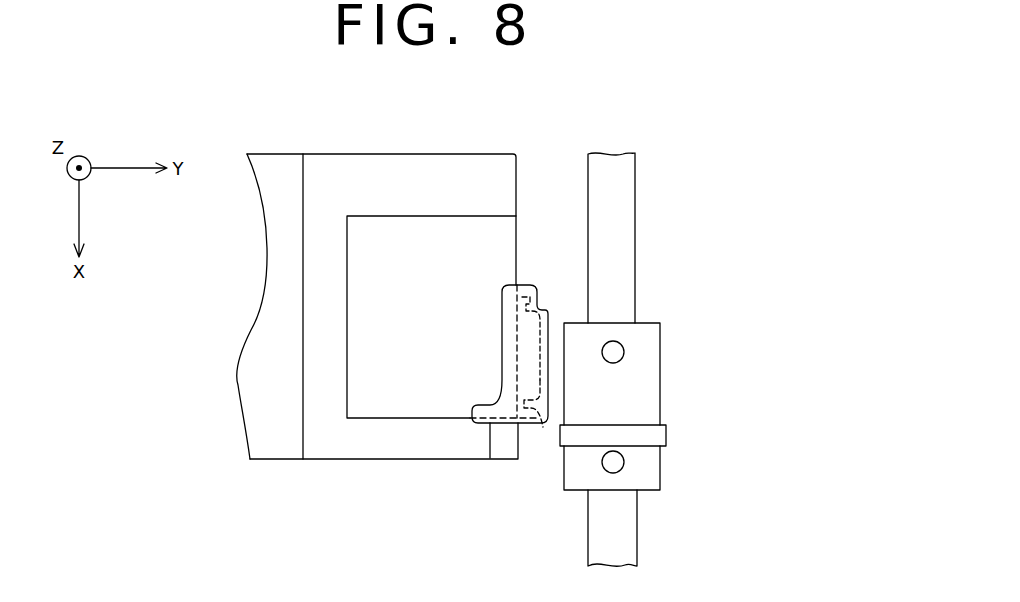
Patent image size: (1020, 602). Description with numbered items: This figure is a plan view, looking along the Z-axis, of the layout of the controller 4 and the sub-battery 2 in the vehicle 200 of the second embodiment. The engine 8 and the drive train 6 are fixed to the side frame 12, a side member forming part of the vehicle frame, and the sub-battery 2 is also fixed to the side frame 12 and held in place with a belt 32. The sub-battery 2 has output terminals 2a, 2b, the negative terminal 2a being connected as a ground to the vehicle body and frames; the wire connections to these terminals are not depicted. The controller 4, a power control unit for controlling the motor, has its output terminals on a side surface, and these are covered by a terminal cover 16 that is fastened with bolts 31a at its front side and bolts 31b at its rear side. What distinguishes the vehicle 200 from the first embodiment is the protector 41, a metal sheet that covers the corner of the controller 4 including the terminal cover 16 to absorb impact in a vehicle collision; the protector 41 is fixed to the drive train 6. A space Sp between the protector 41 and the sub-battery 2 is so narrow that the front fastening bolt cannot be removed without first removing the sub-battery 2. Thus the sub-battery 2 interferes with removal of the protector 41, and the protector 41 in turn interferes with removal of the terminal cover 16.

The vehicle 200 is at (733, 67).
The sub-battery 2 is at (650, 365).
The negative terminal 2a is at (613, 462).
The output terminal 2b is at (613, 352).
The controller 4 is at (419, 230).
The drive train 6 is at (408, 442).
The engine 8 is at (285, 442).
The side frame 12 is at (623, 250).
The terminal cover 16 is at (522, 380).
The bolts 31a is at (543, 427).
The bolts 31b is at (538, 305).
The belt 32 is at (650, 435).
The protector 41 is at (490, 425).
The space Sp is at (548, 432).